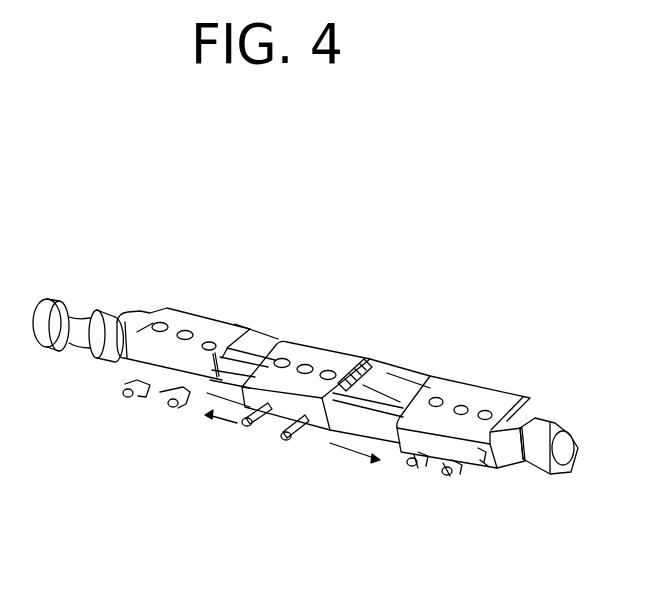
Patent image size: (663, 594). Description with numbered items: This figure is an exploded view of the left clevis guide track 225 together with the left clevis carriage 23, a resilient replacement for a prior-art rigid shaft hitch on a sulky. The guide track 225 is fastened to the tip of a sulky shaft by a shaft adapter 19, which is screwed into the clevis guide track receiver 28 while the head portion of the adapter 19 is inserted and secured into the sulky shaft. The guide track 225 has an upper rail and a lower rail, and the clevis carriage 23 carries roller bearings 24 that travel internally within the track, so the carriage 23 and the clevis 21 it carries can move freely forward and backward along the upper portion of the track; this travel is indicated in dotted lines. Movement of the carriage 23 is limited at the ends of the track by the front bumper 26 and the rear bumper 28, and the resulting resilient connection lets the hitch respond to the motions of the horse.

The left clevis guide track 225 is at (417, 263).
The shaft adapter 19 is at (50, 304).
The clevis guide track receiver 28 is at (110, 318).
The left clevis carriage 23 is at (308, 346).
The roller bearings 24 is at (388, 358).
The clevis 21 is at (265, 433).
The front bumper 26 is at (536, 466).